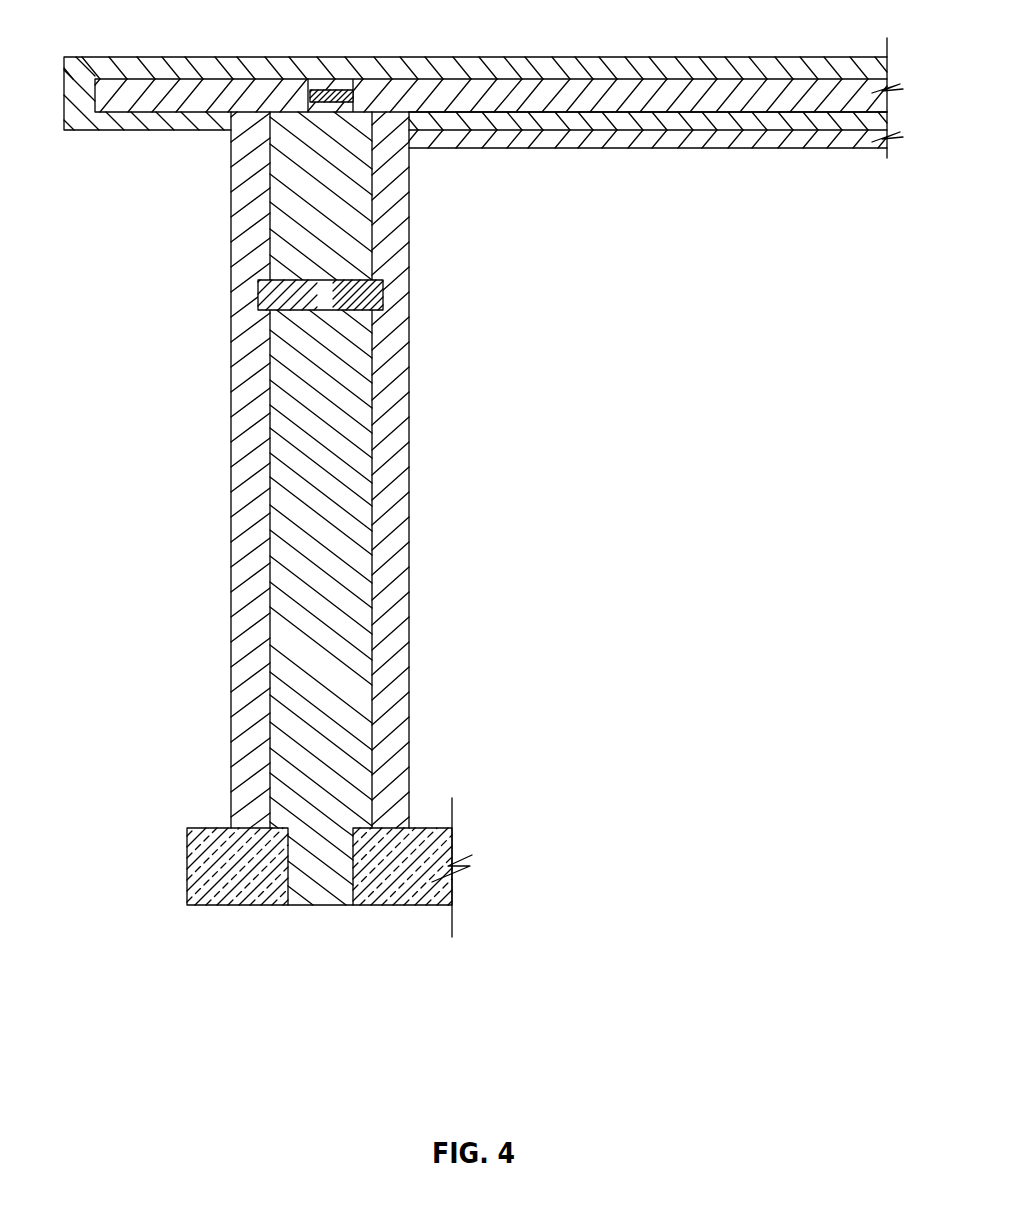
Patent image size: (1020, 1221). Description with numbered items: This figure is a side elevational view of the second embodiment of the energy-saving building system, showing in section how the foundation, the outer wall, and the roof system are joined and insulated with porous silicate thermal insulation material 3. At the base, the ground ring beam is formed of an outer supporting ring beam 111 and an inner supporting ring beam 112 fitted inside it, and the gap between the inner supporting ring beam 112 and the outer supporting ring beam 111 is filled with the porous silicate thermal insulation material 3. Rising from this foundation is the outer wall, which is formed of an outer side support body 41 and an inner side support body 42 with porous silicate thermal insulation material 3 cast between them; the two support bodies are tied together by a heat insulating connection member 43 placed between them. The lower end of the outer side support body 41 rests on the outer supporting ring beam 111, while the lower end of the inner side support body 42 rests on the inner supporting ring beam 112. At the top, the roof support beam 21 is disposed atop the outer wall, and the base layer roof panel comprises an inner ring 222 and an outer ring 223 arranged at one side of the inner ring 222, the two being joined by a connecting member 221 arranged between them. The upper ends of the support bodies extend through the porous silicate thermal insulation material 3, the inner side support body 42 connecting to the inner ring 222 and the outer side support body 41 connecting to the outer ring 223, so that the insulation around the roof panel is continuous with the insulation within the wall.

The porous silicate thermal insulation material 3 is at (532, 120).
The roof support beam 21 is at (750, 138).
The outer side support body 41 is at (243, 383).
The inner side support body 42 is at (398, 200).
The heat insulating connection member 43 is at (330, 308).
The outer supporting ring beam 111 is at (223, 875).
The inner supporting ring beam 112 is at (413, 872).
The connecting member 221 is at (326, 100).
The inner ring 222 is at (633, 100).
The outer ring 223 is at (190, 97).